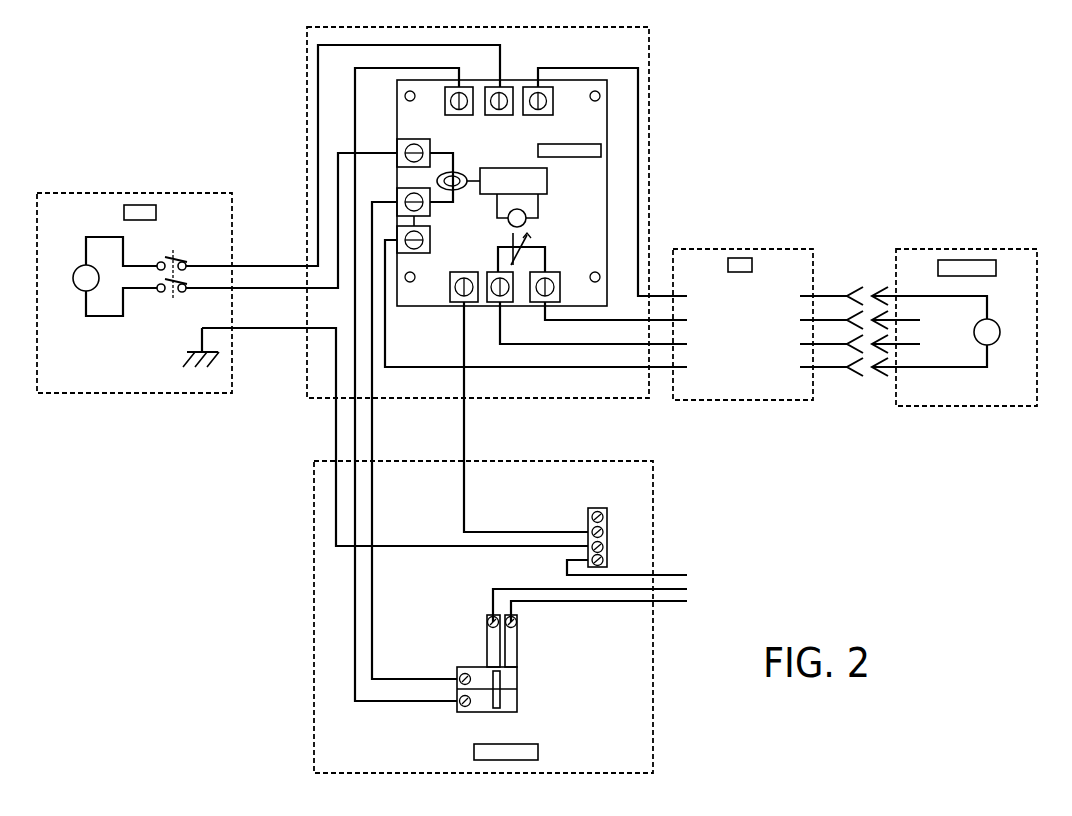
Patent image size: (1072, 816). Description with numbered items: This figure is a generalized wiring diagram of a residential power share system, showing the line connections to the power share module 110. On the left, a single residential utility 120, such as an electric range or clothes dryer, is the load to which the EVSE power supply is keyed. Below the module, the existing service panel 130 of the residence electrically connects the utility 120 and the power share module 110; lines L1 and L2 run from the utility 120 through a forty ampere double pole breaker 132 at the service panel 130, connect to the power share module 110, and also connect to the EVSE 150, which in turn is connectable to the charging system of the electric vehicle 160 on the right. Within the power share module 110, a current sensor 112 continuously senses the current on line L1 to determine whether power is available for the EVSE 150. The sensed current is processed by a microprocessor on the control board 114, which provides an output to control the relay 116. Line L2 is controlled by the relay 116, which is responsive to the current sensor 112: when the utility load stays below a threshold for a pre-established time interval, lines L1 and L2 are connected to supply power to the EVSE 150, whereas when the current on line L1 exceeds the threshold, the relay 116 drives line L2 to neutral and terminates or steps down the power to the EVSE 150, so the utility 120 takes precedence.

The power share module 110 is at (457, 364).
The current sensor 112 is at (525, 167).
The control board 114 is at (590, 233).
The relay 116 is at (512, 224).
The residential utility 120 is at (185, 193).
The service panel 130 is at (491, 617).
The double pole breaker 132 is at (498, 679).
The EVSE 150 is at (770, 249).
The electric vehicle 160 is at (973, 249).